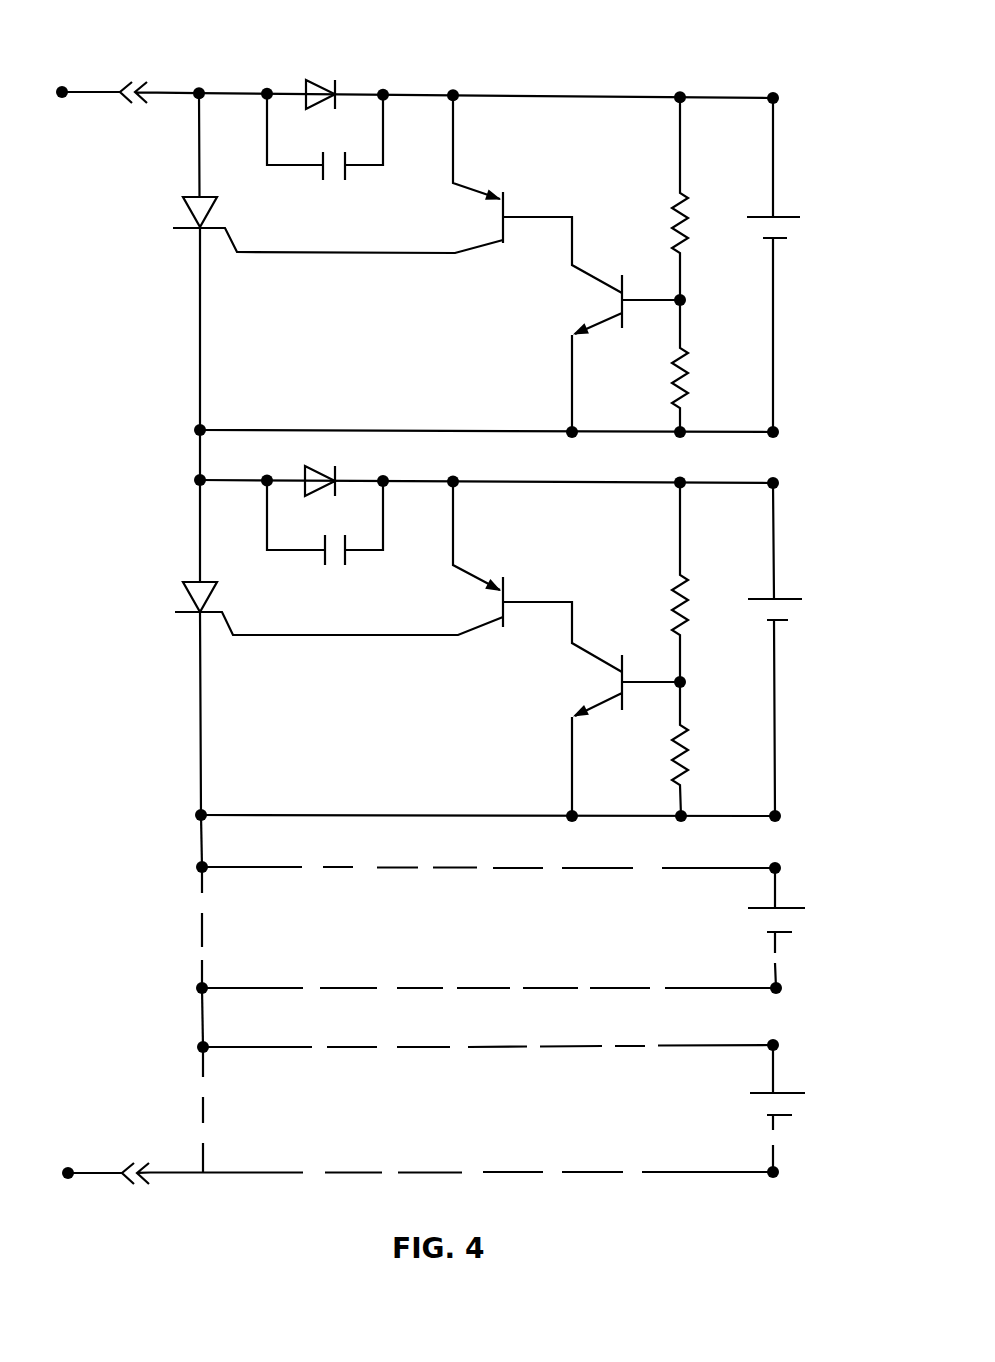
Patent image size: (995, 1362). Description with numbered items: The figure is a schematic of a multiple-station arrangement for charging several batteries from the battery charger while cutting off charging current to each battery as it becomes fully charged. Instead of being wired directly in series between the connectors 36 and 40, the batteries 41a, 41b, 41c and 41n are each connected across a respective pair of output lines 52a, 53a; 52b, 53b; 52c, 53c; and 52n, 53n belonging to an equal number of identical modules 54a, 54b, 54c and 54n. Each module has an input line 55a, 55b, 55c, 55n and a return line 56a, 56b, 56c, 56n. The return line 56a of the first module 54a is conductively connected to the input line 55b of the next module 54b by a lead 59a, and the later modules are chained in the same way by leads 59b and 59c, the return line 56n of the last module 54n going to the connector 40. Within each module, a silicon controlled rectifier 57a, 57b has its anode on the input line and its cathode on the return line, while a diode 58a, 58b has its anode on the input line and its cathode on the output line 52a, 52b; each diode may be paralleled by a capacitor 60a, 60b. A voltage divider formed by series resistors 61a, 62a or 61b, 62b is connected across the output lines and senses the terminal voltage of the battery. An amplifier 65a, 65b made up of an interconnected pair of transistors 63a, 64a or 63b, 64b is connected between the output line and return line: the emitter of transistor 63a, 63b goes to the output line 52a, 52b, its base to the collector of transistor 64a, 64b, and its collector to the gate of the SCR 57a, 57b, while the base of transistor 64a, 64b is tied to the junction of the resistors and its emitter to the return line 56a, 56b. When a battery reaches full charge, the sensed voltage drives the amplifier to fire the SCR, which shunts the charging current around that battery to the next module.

The connector 36 is at (140, 82).
The connector 40 is at (143, 1163).
The battery 41a is at (858, 191).
The battery 41b is at (864, 589).
The battery 41c is at (874, 884).
The battery 41n is at (795, 1103).
The output line 52a is at (766, 67).
The output line 52b is at (732, 483).
The output line 52c is at (766, 864).
The output line 52n is at (745, 1043).
The output line 53a is at (717, 434).
The output line 53b is at (732, 817).
The output line 53c is at (715, 987).
The output line 53n is at (720, 1172).
The module 54a is at (542, 73).
The module 54b is at (540, 472).
The module 54c is at (501, 857).
The module 54n is at (483, 1040).
The input line 55a is at (230, 92).
The input line 55b is at (304, 471).
The input line 55c is at (381, 854).
The input line 55n is at (356, 1041).
The return line 56a is at (347, 430).
The return line 56b is at (353, 806).
The return line 56c is at (311, 952).
The return line 56n is at (227, 1175).
The silicon controlled rectifier 57a is at (185, 212).
The silicon controlled rectifier 57b is at (185, 600).
The diode 58a is at (421, 71).
The diode 58b is at (337, 463).
The lead 59a is at (198, 456).
The lead 59b is at (200, 835).
The lead 59c is at (200, 1003).
The capacitor 60a is at (337, 182).
The capacitor 60b is at (406, 597).
The resistor 61a is at (756, 201).
The resistor 61b is at (759, 581).
The resistor 62a is at (682, 390).
The resistor 62b is at (688, 748).
The transistor 63a is at (591, 177).
The transistor 63b is at (510, 585).
The transistor 64a is at (632, 287).
The transistor 64b is at (632, 667).
The amplifier 65a is at (528, 245).
The amplifier 65b is at (531, 651).